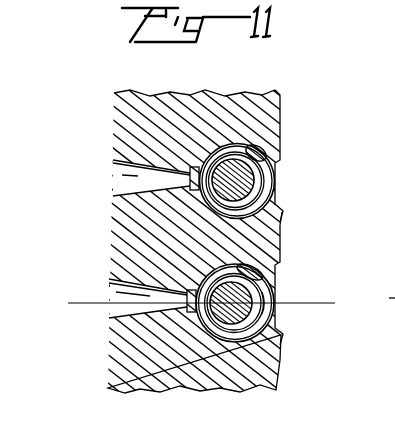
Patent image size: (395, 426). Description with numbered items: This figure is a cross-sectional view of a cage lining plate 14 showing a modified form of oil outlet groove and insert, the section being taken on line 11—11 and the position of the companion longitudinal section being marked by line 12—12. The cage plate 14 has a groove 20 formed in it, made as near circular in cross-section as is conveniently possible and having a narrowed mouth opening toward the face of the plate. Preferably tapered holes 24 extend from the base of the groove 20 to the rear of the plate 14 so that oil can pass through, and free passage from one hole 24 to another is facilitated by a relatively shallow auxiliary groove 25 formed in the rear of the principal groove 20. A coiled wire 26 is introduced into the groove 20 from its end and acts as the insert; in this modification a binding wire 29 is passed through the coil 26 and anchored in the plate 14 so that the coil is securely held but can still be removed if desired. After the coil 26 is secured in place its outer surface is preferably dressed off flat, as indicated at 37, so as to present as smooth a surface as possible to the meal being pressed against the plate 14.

The cage plate 14 is at (252, 126).
The groove 20 is at (270, 172).
The binding wire 29 is at (238, 187).
The coiled wire 26 is at (280, 219).
The dressed flat outer surface of coil 37 is at (264, 299).
The tapered hole 24 is at (195, 178).
The auxiliary groove 25 is at (196, 183).
The section line 12- 12 is at (81, 308).
The section line 11- 11 is at (382, 301).